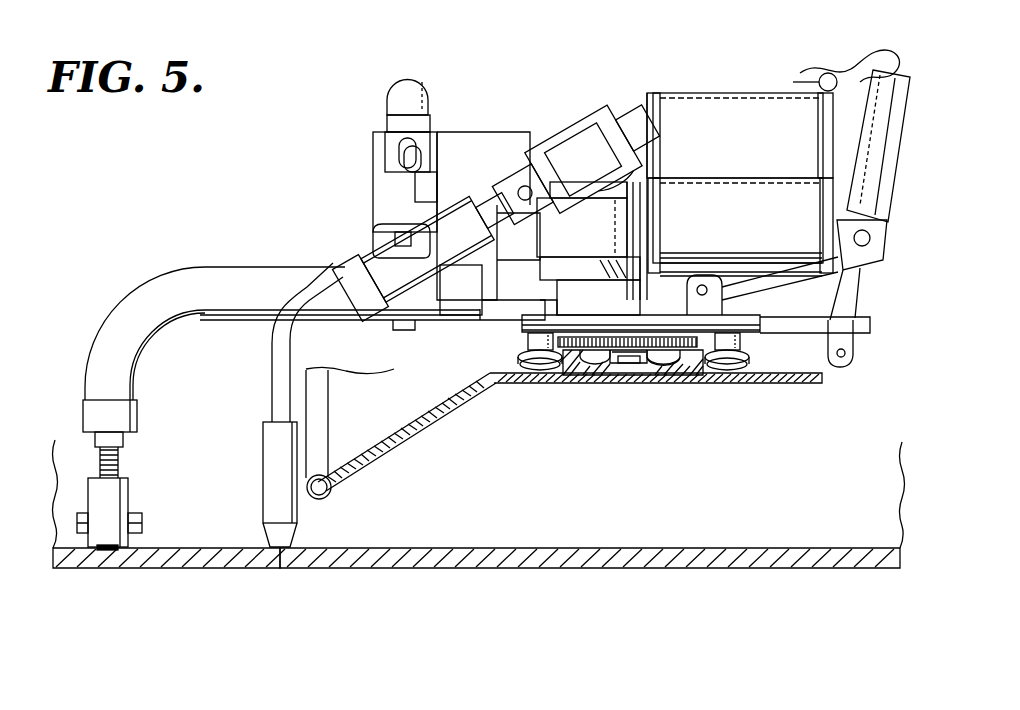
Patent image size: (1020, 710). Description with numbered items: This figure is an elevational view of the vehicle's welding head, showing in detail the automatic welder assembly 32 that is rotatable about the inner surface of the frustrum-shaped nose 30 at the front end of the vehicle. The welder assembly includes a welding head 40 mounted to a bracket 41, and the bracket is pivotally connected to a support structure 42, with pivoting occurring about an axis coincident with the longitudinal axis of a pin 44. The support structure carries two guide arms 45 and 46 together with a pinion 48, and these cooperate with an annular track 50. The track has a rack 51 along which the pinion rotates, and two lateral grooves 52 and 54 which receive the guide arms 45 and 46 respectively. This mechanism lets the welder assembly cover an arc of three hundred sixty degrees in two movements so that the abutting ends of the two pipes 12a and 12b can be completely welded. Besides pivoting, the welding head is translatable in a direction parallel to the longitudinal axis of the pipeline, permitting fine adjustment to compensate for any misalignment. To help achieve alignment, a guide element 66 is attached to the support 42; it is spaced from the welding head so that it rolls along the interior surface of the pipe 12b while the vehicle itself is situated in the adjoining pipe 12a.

The pipe 12a is at (322, 568).
The pipe 12b is at (207, 565).
The frustrum-shaped nose 30 is at (389, 447).
The automatic welder assembly 32 is at (351, 119).
The welding head 40 is at (272, 470).
The bracket 41 is at (577, 132).
The support structure 42 is at (795, 328).
The pin 44 is at (704, 288).
The guide arm 45 is at (540, 368).
The guide arm 46 is at (810, 347).
The pinion 48 is at (627, 356).
The annular track 50 is at (663, 365).
The rack 51 is at (657, 356).
The lateral groove 52 is at (550, 354).
The lateral groove 54 is at (705, 364).
The guide element 66 is at (197, 283).